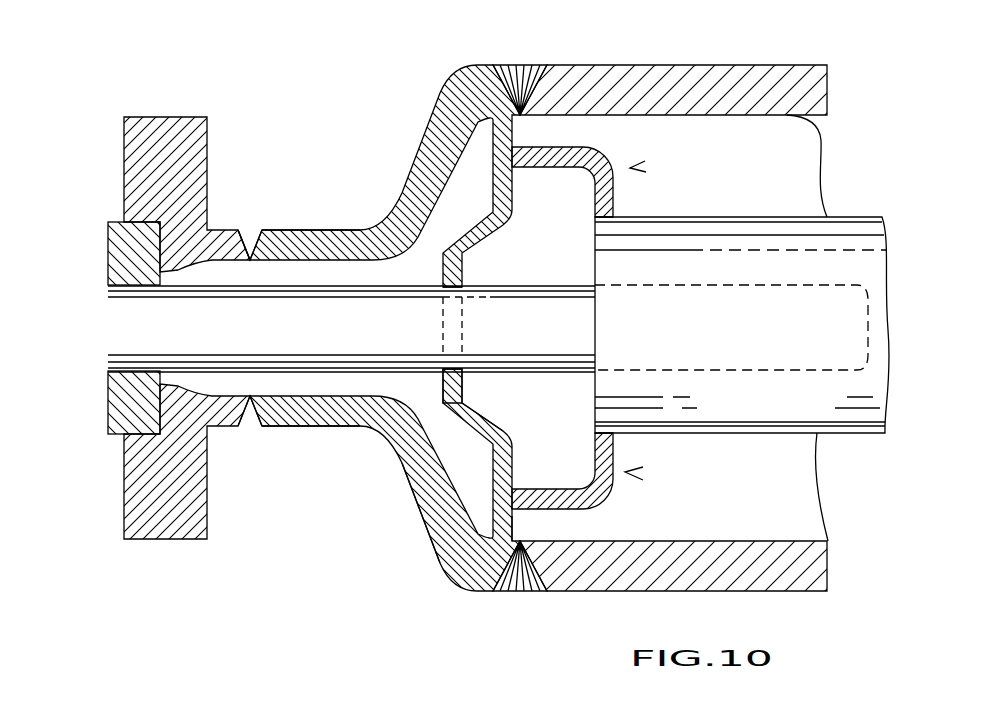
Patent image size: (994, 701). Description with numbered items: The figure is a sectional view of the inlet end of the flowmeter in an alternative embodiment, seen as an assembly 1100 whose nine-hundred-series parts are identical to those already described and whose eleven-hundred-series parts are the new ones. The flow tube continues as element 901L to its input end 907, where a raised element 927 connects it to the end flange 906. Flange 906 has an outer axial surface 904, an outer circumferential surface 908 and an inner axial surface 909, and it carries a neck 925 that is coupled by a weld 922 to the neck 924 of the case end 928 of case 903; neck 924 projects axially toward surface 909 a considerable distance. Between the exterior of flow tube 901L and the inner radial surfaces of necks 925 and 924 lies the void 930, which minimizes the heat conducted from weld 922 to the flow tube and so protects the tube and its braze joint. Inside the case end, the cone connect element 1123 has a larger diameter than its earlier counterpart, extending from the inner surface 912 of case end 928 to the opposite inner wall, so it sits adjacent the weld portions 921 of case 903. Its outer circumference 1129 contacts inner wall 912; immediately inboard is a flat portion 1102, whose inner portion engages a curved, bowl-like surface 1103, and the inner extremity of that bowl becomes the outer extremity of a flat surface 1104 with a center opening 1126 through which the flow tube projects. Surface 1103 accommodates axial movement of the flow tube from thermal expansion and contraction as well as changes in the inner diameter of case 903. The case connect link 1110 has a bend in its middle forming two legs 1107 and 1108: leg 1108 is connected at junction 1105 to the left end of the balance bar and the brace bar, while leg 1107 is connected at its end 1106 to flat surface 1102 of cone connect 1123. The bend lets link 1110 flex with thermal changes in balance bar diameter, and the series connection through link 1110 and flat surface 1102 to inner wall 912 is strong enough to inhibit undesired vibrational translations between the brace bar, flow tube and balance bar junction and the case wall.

The case 903 is at (740, 65).
The outer axial surface 904 is at (123, 200).
The flange 906 is at (140, 163).
The input end 907 is at (312, 329).
The outer circumferential surface 908 is at (191, 501).
The inner axial surface 909 is at (208, 512).
The inner surface 912 is at (822, 140).
The weld portions 921 is at (523, 80).
The weld 922 is at (275, 284).
The neck 924 is at (293, 230).
The neck 925 is at (238, 230).
The raised element 927 is at (111, 250).
The case end 928 is at (437, 542).
The void 930 is at (367, 428).
The flow tube 901L is at (352, 334).
The pipe 1100 is at (708, 30).
The flat portion 1102 is at (469, 480).
The curved surface 1103 is at (492, 416).
The flat surface 1104 is at (464, 378).
The junction 1105 is at (621, 217).
The end 1106 is at (648, 169).
The leg 1107 is at (645, 471).
The leg 1108 is at (616, 447).
The case connect link 1110 is at (631, 168).
The cone connect element 1123 is at (420, 209).
The center opening 1126 is at (517, 268).
The outer circumference 1129 is at (514, 528).